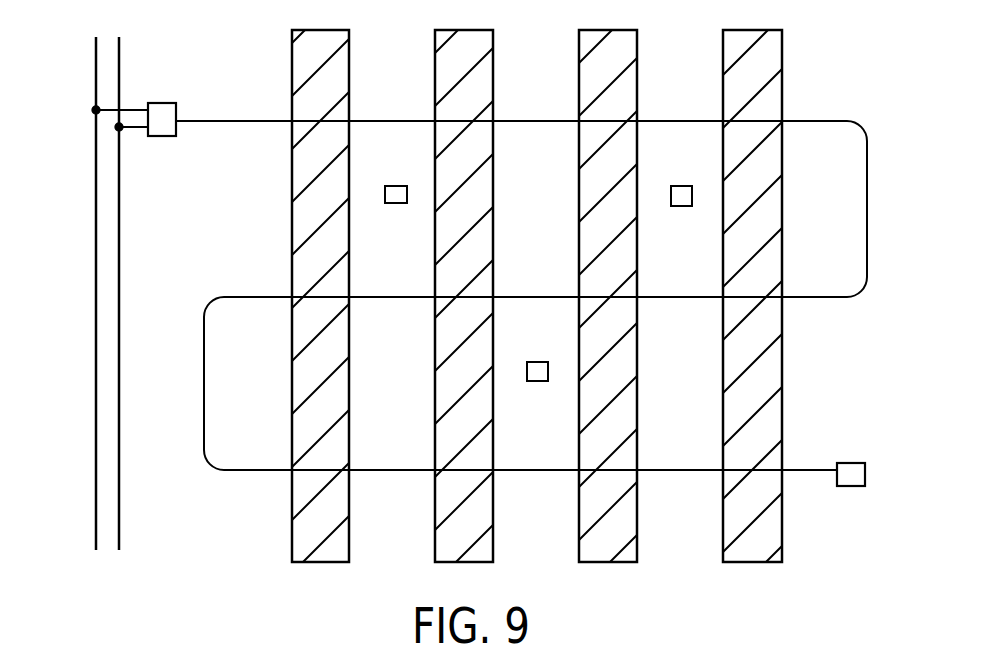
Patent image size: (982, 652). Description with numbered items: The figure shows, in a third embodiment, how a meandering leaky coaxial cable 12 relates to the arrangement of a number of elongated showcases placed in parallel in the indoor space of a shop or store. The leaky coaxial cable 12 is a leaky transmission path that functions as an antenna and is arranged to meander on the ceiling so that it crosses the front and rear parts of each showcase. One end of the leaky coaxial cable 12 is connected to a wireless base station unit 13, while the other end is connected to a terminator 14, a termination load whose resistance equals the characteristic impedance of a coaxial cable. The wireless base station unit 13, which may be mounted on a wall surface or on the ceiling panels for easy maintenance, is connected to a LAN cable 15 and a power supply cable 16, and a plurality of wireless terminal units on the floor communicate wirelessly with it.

The leaky coaxial cable 12 is at (832, 300).
The wireless base station unit 13 is at (162, 103).
The terminator 14 is at (848, 462).
The LAN cable 15 is at (95, 198).
The power supply cable 16 is at (120, 241).